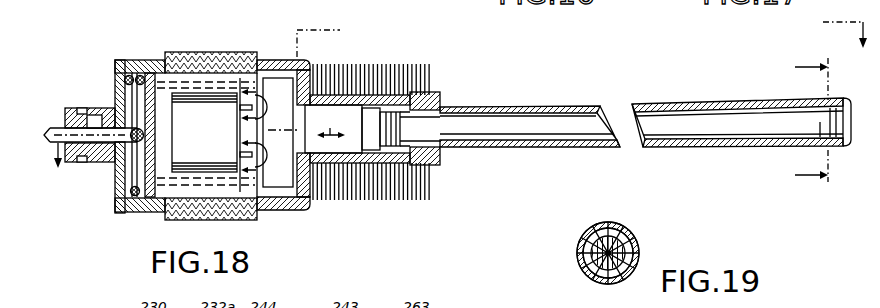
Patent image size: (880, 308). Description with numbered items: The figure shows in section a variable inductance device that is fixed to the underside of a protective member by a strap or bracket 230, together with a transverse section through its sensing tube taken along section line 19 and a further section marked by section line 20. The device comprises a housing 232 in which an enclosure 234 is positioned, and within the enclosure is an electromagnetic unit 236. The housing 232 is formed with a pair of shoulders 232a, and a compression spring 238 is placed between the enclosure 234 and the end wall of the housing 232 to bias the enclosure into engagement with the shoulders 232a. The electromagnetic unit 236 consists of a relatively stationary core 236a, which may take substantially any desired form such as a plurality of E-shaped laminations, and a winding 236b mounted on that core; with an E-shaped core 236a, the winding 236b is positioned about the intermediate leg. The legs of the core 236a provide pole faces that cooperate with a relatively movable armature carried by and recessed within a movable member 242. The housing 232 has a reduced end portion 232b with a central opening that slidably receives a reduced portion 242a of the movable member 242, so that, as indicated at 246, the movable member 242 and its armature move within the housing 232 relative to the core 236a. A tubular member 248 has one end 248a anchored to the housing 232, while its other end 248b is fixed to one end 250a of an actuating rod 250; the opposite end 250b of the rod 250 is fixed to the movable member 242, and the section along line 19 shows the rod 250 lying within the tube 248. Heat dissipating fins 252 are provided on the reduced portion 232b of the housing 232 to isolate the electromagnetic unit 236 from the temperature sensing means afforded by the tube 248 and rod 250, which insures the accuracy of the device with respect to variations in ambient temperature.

In FIG. 18, the strap or bracket 230 is at (225, 64).
In FIG. 18, the housing 232 is at (309, 211).
In FIG. 18, the shoulders 232a is at (241, 71).
In FIG. 18, the reduced end portion 232b is at (372, 108).
In FIG. 18, the enclosure 234 is at (151, 199).
In FIG. 18, the electromagnetic unit 236 is at (145, 61).
In FIG. 18, the core 236a is at (188, 208).
In FIG. 18, the winding 236b is at (187, 108).
In FIG. 18, the compression spring 238 is at (137, 97).
In FIG. 18, the movable member 242 is at (275, 80).
In FIG. 18, the reduced portion 242a is at (328, 96).
In FIG. 18, the movement indication 246 is at (333, 129).
In FIG. 18, the tubular member 248 is at (518, 108).
In FIG. 19, the tubular member 248 is at (597, 222).
In FIG. 18, the tubular member end 248a is at (434, 103).
In FIG. 18, the tubular member other end 248b is at (775, 144).
In FIG. 19, the tubular member other end 248b is at (578, 243).
In FIG. 18, the actuating rod 250 is at (560, 122).
In FIG. 19, the actuating rod 250 is at (640, 234).
In FIG. 18, the actuating rod end 250a is at (785, 118).
In FIG. 19, the actuating rod end 250a is at (580, 272).
In FIG. 18, the actuating rod opposite end 250b is at (434, 160).
In FIG. 18, the heat dissipating fins 252 is at (399, 196).
In FIG. 18, the section line 19- 19 is at (798, 126).
In FIG. 18, the section line 20- 20 is at (462, 111).